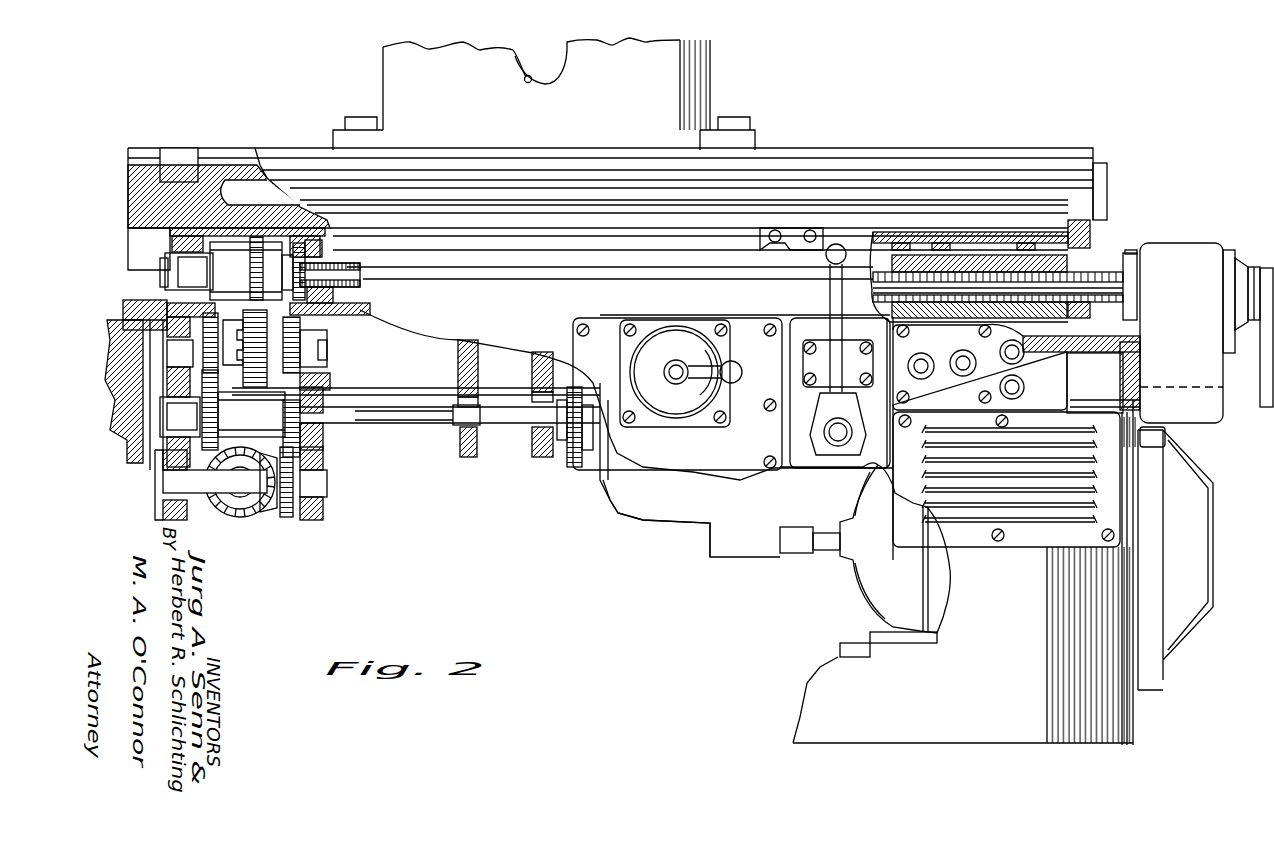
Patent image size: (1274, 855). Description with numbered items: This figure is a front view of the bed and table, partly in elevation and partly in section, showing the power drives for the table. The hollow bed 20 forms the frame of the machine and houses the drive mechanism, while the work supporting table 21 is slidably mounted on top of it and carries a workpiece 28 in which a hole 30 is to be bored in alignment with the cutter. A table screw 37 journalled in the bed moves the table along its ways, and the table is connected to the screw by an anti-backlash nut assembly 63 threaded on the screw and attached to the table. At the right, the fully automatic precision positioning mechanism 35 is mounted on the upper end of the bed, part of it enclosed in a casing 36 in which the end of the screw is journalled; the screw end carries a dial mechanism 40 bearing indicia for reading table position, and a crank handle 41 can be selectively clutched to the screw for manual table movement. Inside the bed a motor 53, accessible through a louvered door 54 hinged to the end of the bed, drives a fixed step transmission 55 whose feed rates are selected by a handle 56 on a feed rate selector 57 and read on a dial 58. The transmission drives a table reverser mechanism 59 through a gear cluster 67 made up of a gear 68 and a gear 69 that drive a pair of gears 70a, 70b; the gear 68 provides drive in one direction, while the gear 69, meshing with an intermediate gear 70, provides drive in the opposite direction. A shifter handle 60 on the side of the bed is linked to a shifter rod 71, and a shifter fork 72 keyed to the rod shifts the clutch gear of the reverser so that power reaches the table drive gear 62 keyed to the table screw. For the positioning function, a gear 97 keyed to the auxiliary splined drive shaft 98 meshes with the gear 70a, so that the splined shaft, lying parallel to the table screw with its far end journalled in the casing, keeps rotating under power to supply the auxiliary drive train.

The bed 20 is at (1138, 335).
The work supporting table 21 is at (222, 148).
The workpiece 28 is at (383, 63).
The hole 30 is at (524, 81).
The precision positioning mechanism 35 is at (1183, 228).
The casing 36 is at (1190, 413).
The table screw 37 is at (368, 262).
The dial mechanism 40 is at (1240, 258).
The crank handle 41 is at (1265, 370).
The motor 53 is at (862, 590).
The louvered door 54 is at (1195, 516).
The fixed step transmission 55 is at (665, 520).
The handle 56 is at (740, 370).
The feed rate selector 57 is at (742, 408).
The dial 58 is at (668, 415).
The table reverser mechanism 59 is at (352, 352).
The handle 60 is at (828, 292).
The table drive gear 62 is at (245, 240).
The anti-backlash nut assembly 63 is at (1005, 318).
The gear cluster 67 is at (244, 436).
The gear 68 is at (220, 416).
The gear 69 is at (325, 418).
The intermediate gear 70 is at (327, 378).
The gear 70a is at (327, 345).
The gear 70b is at (186, 271).
The shifter rod 71 is at (420, 388).
The shifter fork 72 is at (257, 268).
The gear 97 is at (328, 238).
The auxiliary splined drive shaft 98 is at (362, 297).